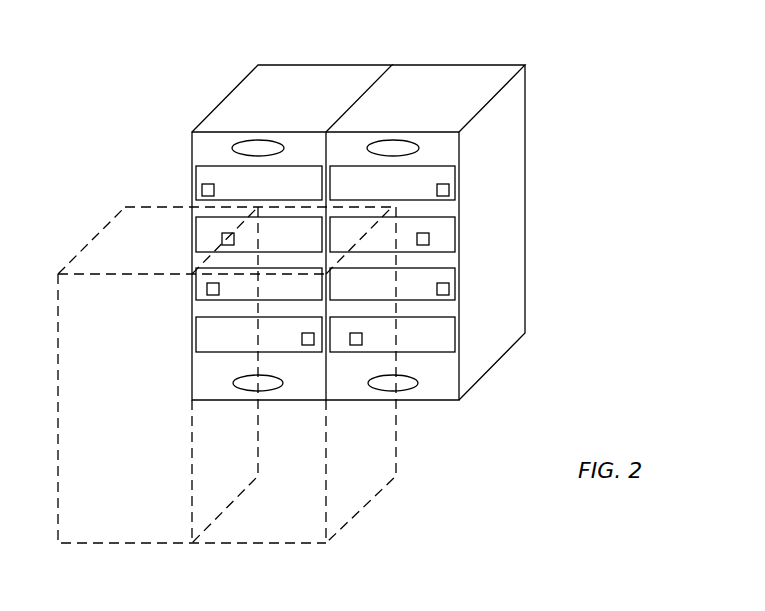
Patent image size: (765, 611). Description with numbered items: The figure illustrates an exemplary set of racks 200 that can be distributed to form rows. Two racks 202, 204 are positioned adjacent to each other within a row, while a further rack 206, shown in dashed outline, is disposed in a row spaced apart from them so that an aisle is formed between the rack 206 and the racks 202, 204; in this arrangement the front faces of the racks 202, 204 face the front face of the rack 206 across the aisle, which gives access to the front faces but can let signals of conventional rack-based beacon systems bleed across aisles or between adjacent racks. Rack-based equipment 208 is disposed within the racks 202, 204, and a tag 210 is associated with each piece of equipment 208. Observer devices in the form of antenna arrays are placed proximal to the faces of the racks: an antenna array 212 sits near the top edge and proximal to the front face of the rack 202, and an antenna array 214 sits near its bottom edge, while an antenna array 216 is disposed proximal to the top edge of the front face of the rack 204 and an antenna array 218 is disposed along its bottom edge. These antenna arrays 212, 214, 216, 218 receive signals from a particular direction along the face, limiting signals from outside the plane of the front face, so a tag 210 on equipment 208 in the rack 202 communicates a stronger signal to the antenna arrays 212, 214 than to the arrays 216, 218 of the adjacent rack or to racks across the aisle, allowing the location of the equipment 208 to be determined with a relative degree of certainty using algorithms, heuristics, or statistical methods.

The set of racks 200 is at (564, 92).
The rack 202 is at (325, 65).
The rack 204 is at (445, 65).
The rack 206 is at (100, 265).
The rack-based equipment 208 is at (217, 166).
The tag 210 is at (202, 188).
The antenna array 212 is at (258, 140).
The antenna array 214 is at (245, 391).
The antenna array 216 is at (394, 139).
The antenna array 218 is at (397, 391).